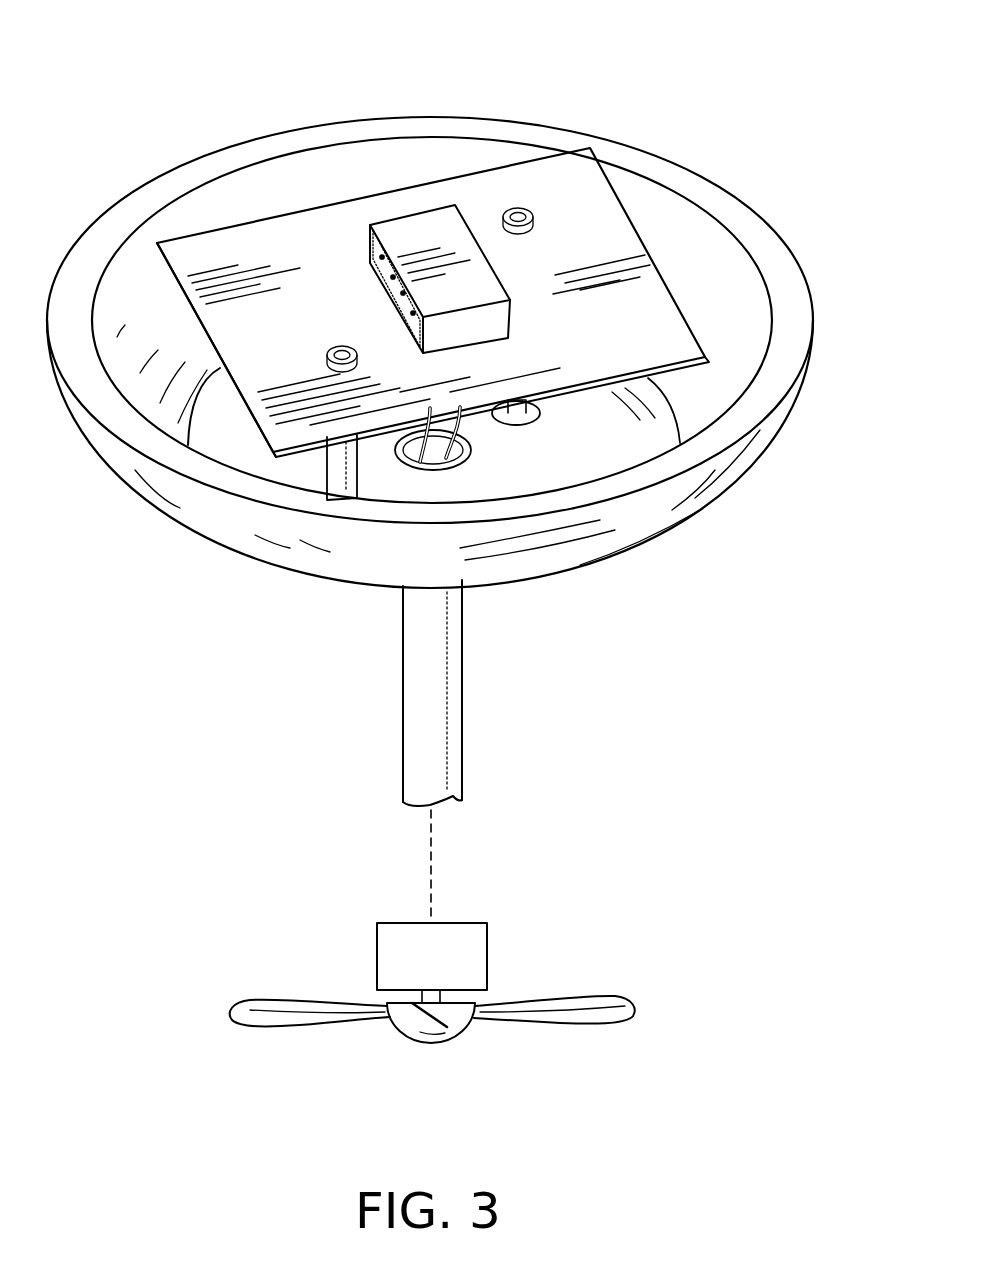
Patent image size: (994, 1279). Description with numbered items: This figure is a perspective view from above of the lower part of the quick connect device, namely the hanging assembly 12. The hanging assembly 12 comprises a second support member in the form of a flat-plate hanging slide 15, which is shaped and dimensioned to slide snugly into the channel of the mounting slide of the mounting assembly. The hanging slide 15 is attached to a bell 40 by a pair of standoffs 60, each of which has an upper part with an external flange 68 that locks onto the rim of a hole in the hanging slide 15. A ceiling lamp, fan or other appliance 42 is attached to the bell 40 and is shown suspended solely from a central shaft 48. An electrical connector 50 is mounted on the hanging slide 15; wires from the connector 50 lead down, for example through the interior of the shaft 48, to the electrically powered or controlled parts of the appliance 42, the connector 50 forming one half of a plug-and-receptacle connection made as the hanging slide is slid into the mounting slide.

The hanging assembly 12 is at (182, 108).
The hanging slide 15 is at (528, 190).
The bell 40 is at (325, 552).
The appliance 42 is at (452, 972).
The central shaft 48 is at (447, 760).
The electrical connector 50 is at (417, 227).
The standoff 60 is at (324, 465).
The external flange 68 is at (535, 216).